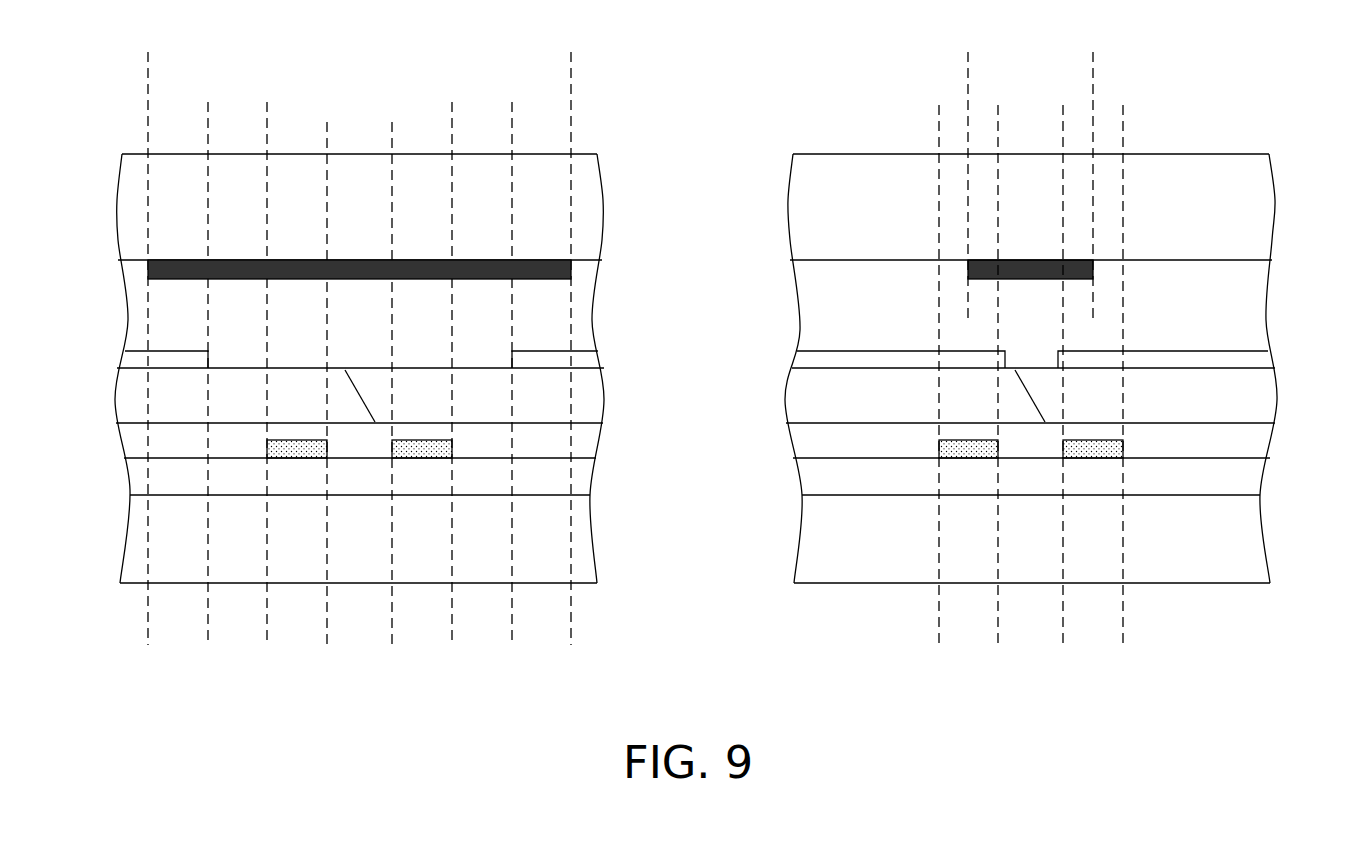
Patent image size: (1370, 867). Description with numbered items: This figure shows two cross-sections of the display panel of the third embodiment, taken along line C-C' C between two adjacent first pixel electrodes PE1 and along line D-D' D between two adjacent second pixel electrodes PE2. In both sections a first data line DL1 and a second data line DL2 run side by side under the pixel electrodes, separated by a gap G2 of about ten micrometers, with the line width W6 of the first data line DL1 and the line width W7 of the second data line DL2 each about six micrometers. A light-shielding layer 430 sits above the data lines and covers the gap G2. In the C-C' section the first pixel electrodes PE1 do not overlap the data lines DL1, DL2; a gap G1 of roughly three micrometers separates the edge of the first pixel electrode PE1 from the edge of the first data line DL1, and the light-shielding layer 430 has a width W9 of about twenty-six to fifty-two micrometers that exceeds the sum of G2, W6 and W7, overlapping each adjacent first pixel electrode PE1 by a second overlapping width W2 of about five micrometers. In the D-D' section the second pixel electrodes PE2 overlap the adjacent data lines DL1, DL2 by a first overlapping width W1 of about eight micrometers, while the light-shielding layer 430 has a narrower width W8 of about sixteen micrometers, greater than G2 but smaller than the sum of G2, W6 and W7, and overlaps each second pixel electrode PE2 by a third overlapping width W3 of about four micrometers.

The light-shielding layer 430 is at (572, 270).
The first pixel electrode PE1 is at (137, 358).
The second pixel electrode PE2 is at (808, 359).
The first data line DL1 is at (445, 449).
The second data line DL2 is at (267, 449).
The width of the light-shielding layer W9 is at (148, 72).
The width of the light-shielding layer W8 is at (968, 73).
The second overlapping width W2 is at (148, 116).
The third overlapping width W3 is at (943, 112).
The first overlapping width W1 is at (986, 144).
The gap G1 is at (208, 140).
The gap G2 is at (327, 607).
The line width of the first data line W6 is at (267, 607).
The line width of the second data line W7 is at (392, 607).
The line C-C' C is at (359, 484).
The line D-D' D is at (1031, 491).